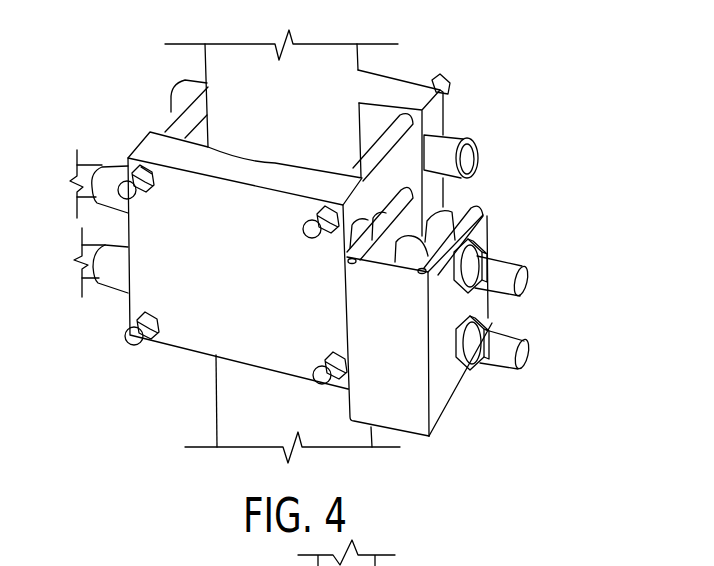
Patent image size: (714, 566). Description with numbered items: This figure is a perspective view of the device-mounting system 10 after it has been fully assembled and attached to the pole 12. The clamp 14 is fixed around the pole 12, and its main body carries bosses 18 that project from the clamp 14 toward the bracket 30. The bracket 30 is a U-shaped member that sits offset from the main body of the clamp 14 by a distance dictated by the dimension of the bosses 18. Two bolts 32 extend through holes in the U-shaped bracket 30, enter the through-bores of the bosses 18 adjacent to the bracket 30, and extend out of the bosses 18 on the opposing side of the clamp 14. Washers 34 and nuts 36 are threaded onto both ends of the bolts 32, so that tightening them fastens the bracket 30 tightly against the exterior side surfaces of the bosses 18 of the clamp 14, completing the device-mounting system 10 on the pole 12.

The device-mounting system 10 is at (476, 54).
The pole 12 is at (320, 60).
The clamp 14 is at (408, 88).
The bosses 18 is at (110, 183).
The bracket 30 is at (402, 390).
The bolts 32 is at (90, 164).
The washers 34 is at (460, 373).
The nuts 36 is at (487, 333).